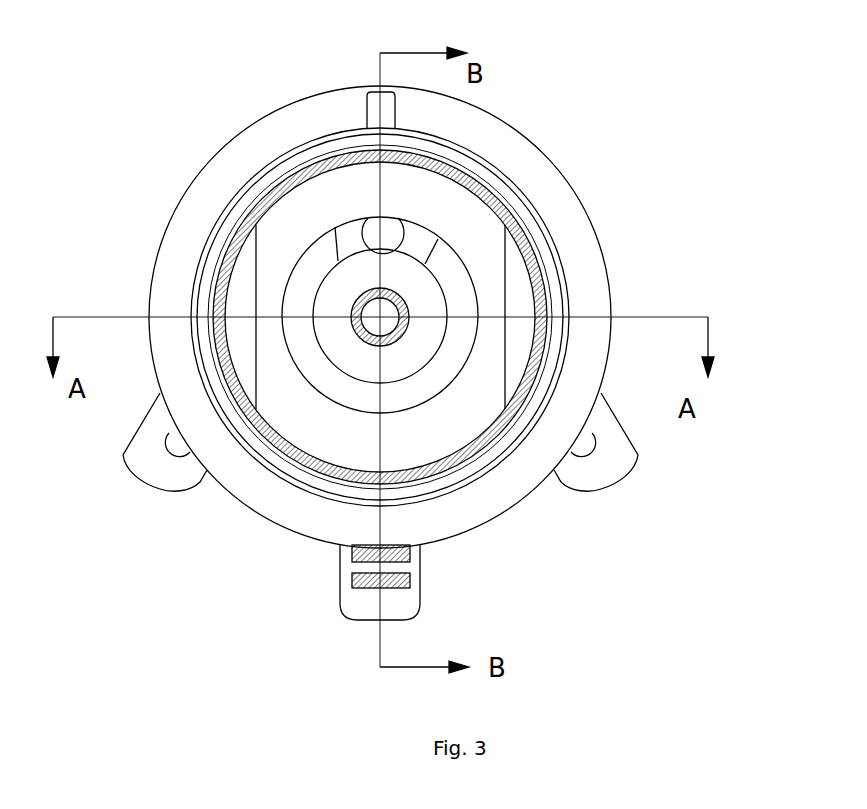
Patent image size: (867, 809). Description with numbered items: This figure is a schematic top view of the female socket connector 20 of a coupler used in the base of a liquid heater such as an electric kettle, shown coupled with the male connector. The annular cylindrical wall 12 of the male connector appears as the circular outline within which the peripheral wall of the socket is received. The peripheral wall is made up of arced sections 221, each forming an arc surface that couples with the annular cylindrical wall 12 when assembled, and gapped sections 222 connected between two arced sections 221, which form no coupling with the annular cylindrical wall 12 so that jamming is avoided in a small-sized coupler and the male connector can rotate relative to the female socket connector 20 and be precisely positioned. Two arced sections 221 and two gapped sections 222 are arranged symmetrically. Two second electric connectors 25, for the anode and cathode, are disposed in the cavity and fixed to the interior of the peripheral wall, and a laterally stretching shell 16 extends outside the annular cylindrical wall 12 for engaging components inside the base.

The annular cylindrical wall 12 is at (333, 157).
The laterally stretching shell 16 is at (418, 597).
The female socket connector 20 is at (198, 206).
The second electric connector 25 is at (174, 474).
The arced section 221 is at (495, 163).
The gapped section 222 is at (505, 280).